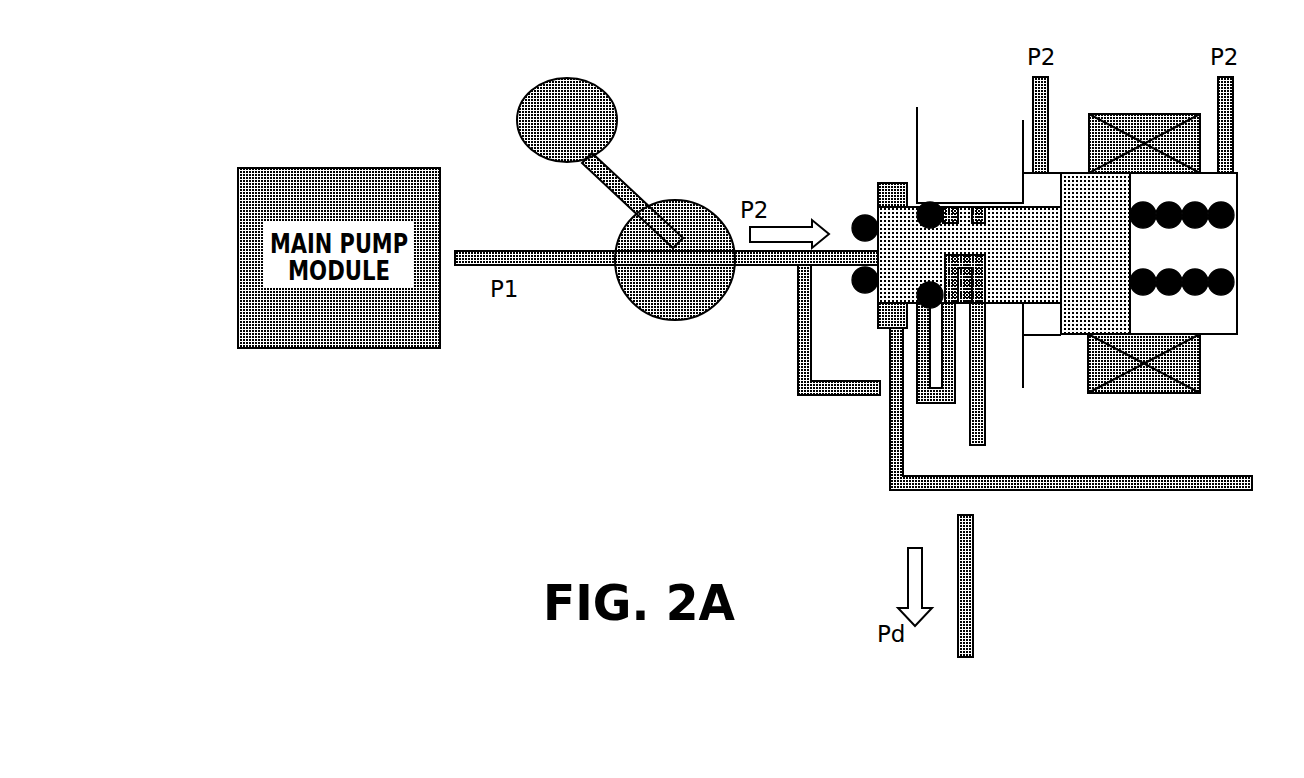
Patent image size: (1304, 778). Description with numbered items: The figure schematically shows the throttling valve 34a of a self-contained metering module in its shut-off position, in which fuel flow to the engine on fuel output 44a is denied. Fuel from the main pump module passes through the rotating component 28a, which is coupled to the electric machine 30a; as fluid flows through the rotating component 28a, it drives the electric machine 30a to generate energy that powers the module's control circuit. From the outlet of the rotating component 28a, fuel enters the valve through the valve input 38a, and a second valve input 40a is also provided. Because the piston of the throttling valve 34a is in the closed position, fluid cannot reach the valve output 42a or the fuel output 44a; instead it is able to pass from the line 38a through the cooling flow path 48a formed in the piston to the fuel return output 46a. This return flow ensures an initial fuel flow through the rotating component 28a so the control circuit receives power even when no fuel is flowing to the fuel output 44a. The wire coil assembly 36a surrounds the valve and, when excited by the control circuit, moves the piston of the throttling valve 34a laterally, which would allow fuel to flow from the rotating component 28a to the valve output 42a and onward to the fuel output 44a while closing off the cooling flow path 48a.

The rotating component 28a is at (663, 200).
The electric machine 30a is at (572, 78).
The throttling valve 34a is at (1010, 203).
The wire coil assembly 36a is at (1117, 113).
The valve input 38a is at (845, 250).
The valve input 40a is at (1235, 140).
The valve output 42a is at (813, 298).
The fuel output 44a is at (1176, 475).
The fuel return output 46a is at (973, 590).
The cooling flow path 48a is at (963, 255).